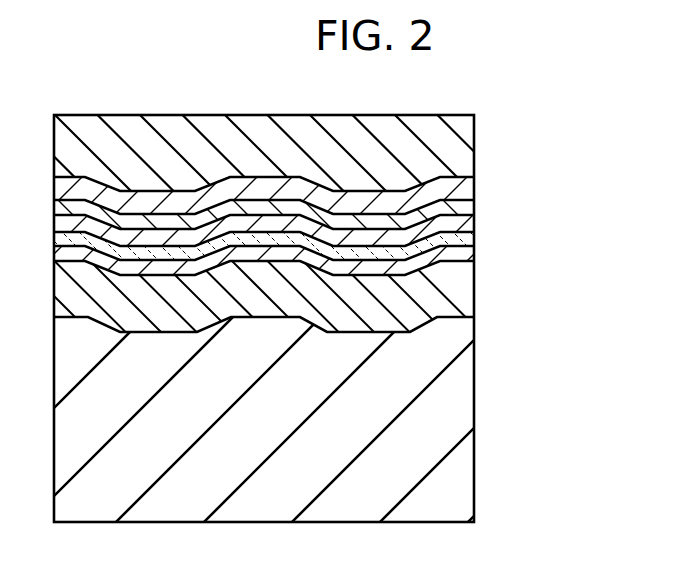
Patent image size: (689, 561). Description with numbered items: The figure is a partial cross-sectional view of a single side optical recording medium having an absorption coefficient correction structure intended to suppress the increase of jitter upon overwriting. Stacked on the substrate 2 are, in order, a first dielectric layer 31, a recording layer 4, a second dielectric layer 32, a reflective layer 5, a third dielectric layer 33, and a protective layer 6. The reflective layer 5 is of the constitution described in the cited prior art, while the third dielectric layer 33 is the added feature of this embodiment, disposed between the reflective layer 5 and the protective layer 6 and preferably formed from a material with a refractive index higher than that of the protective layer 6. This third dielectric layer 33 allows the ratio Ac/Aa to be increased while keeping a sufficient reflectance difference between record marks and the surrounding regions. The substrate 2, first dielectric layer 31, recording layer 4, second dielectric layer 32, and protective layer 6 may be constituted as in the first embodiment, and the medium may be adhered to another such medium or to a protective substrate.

The substrate 2 is at (466, 393).
The first dielectric layer 31 is at (466, 297).
The second dielectric layer 32 is at (465, 220).
The recording layer 4 is at (482, 233).
The reflective layer 5 is at (465, 207).
The third dielectric layer 33 is at (465, 190).
The protective layer 6 is at (465, 150).